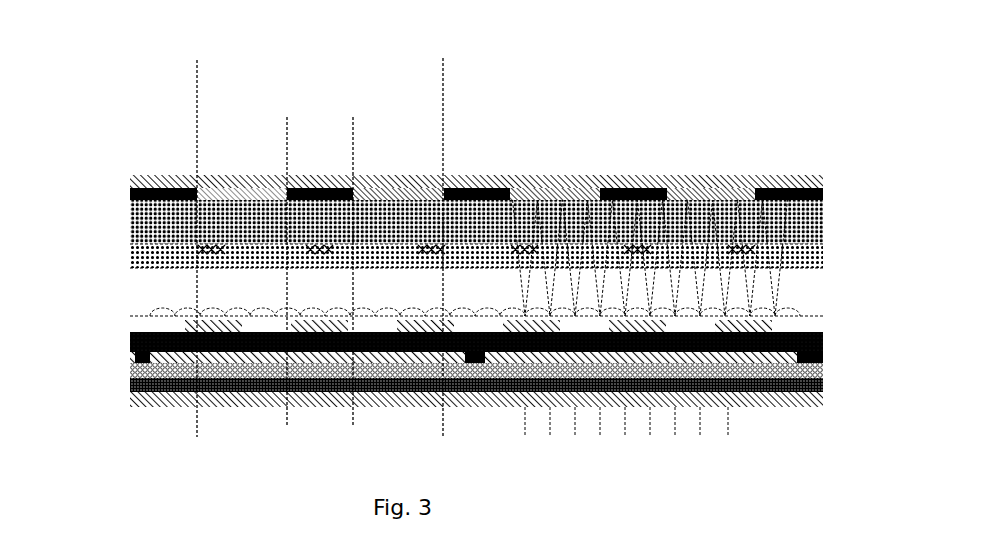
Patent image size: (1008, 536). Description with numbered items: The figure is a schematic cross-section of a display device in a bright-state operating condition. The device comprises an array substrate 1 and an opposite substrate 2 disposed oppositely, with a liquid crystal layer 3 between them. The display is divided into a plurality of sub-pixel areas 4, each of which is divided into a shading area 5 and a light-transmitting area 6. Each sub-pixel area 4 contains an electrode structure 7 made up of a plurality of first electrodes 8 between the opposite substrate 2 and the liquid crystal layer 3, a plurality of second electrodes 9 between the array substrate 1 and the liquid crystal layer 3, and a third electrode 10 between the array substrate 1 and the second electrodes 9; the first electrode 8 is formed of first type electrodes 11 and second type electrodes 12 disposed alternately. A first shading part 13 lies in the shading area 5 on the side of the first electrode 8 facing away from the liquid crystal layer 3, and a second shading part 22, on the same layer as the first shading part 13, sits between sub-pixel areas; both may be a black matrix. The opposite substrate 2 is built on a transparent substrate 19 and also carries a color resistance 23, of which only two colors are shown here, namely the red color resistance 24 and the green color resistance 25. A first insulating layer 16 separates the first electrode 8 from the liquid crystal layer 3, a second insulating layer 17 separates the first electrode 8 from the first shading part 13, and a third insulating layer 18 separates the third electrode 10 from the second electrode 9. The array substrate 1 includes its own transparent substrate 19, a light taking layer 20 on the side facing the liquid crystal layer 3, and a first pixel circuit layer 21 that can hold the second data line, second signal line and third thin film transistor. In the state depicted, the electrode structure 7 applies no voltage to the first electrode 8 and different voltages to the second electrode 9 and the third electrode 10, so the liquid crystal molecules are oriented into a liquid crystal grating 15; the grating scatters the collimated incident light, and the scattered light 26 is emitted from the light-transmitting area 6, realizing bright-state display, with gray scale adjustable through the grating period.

The array substrate 1 is at (519, 384).
The opposite substrate 2 is at (825, 178).
The liquid crystal layer 3 is at (823, 285).
The sub-pixel area 4 is at (297, 83).
The shading area 5 is at (308, 132).
The light-transmitting area 6 is at (385, 125).
The electrode structure 7 is at (418, 330).
The first electrode 8 is at (437, 283).
The second electrode 9 is at (190, 328).
The third electrode 10 is at (446, 361).
The first type electrode 11 is at (295, 248).
The second type electrode 12 is at (205, 250).
The first shading part 13 is at (660, 185).
The liquid crystal grating 15 is at (823, 313).
The first insulating layer 16 is at (823, 265).
The second insulating layer 17 is at (823, 218).
The third insulating layer 18 is at (823, 348).
The transparent substrate 19 is at (813, 177).
The light taking layer 20 is at (870, 362).
The first pixel circuit layer 21 is at (823, 370).
The second shading part 22 is at (773, 178).
The color resistance 23 is at (476, 194).
The red color resistance 24 is at (713, 182).
The green color resistance 25 is at (417, 155).
The light 26 is at (728, 427).